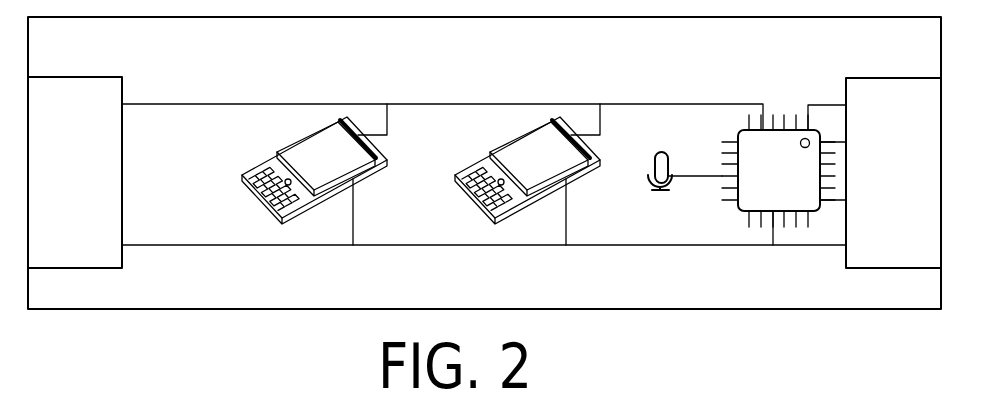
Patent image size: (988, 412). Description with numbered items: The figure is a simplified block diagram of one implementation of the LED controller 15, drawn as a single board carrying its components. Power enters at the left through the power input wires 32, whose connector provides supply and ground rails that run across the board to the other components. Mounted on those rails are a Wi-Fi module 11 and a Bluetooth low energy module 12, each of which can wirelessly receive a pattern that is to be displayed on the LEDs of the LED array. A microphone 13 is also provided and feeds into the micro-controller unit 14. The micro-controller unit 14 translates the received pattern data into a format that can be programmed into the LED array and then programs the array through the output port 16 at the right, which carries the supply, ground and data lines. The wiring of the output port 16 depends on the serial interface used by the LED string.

The Wi-Fi module 11 is at (283, 148).
The Bluetooth low energy (BLE) module 12 is at (496, 148).
The microphone 13 is at (659, 151).
The micro-controller unit (MCU) 14 is at (793, 191).
The LED controller 15 is at (710, 310).
The output port 16 is at (890, 77).
The power input wires 32 is at (57, 77).